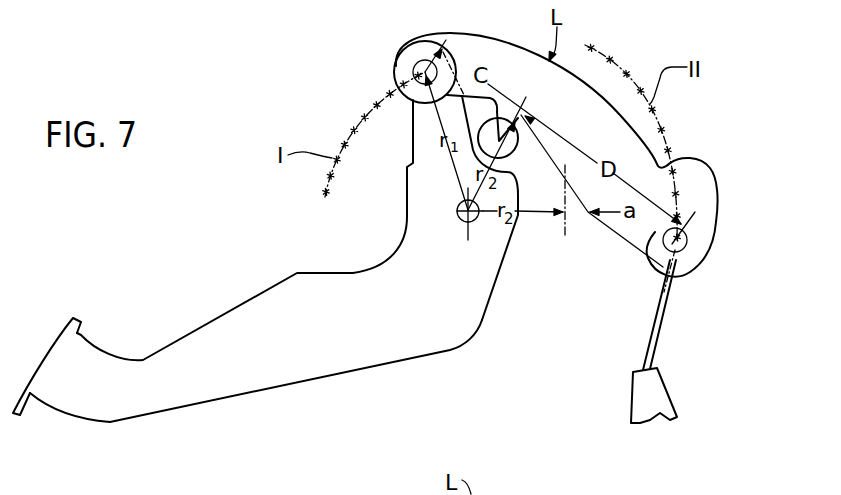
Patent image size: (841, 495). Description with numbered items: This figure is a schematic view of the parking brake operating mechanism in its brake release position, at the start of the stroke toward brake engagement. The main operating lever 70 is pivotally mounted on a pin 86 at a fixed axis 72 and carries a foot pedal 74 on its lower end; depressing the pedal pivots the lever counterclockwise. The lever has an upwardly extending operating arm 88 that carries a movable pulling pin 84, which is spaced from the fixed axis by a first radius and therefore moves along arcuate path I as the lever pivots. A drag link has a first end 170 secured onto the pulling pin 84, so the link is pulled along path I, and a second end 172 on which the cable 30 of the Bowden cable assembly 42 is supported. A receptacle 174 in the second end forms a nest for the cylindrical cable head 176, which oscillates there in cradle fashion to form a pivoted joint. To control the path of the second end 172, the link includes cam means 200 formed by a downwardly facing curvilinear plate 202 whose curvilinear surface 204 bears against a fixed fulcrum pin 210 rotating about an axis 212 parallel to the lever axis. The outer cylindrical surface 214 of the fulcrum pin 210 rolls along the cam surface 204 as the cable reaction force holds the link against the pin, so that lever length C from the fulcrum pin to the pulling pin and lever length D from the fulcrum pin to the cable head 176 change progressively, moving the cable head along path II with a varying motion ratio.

The cable 30 is at (659, 327).
The Bowden cable assembly 42 is at (663, 401).
The main operating lever 70 is at (236, 306).
The fixed axis 72 is at (478, 228).
The foot pedal 74 is at (58, 338).
The pulling pin 84 is at (396, 63).
The pin 86 is at (463, 225).
The operating arm 88 is at (412, 131).
The first end 170 is at (397, 80).
The second end 172 is at (707, 262).
The receptacle 174 is at (716, 222).
The cable head 176 is at (655, 277).
The cam means 200 is at (534, 130).
The curvilinear plate 202 is at (590, 232).
The curvilinear surface 204 is at (545, 206).
The fulcrum pin 210 is at (516, 153).
The axis 212 is at (512, 102).
The outer cylindrical surface 214 is at (520, 143).